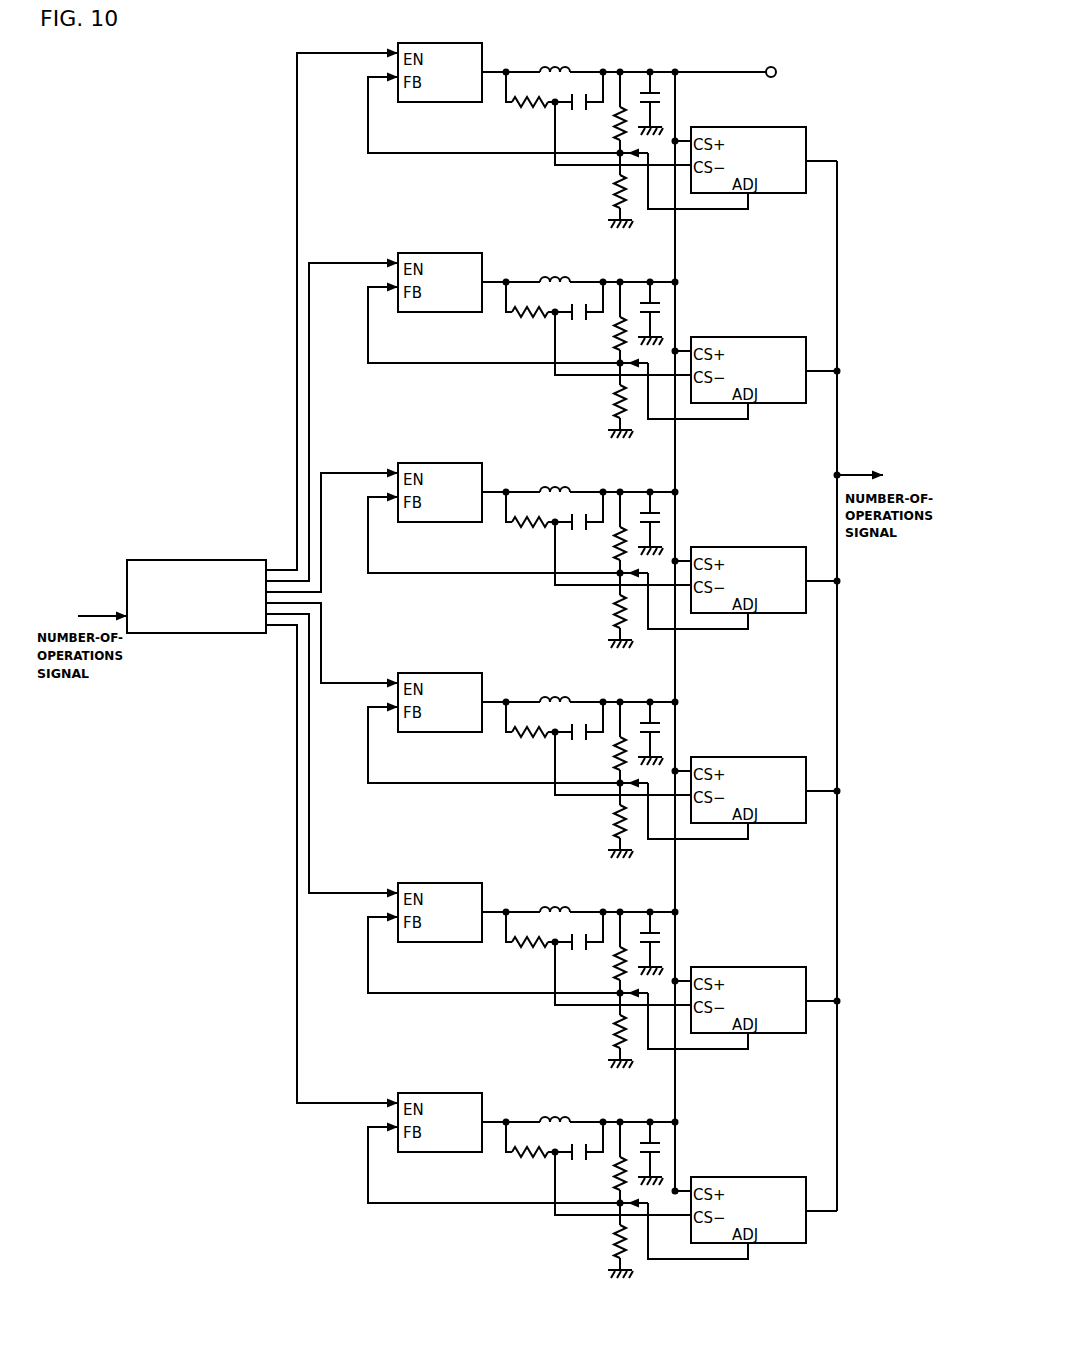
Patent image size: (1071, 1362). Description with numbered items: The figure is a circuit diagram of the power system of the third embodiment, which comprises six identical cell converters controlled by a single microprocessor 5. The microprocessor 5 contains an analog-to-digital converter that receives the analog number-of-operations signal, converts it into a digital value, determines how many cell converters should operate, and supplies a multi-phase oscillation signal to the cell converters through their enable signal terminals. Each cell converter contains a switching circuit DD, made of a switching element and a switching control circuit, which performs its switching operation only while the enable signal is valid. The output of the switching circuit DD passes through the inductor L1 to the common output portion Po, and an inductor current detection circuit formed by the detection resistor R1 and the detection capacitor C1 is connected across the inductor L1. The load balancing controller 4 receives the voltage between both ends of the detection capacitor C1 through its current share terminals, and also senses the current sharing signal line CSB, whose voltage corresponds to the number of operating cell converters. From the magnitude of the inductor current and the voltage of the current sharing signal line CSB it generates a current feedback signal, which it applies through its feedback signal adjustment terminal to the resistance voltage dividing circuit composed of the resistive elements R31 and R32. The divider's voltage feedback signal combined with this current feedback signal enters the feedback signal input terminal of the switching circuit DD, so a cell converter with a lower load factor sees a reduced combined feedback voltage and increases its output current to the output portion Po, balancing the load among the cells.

The load balancing controller 4 is at (783, 127).
The microprocessor 5 is at (225, 560).
The switching circuit DD is at (440, 597).
The inductor L1 is at (555, 579).
The detection resistor R1 is at (533, 645).
The detection capacitor C1 is at (579, 644).
The resistive element R31 is at (623, 110).
The resistive element R32 is at (597, 715).
The output portion Po is at (730, 56).
The current sharing signal line CSB is at (837, 186).